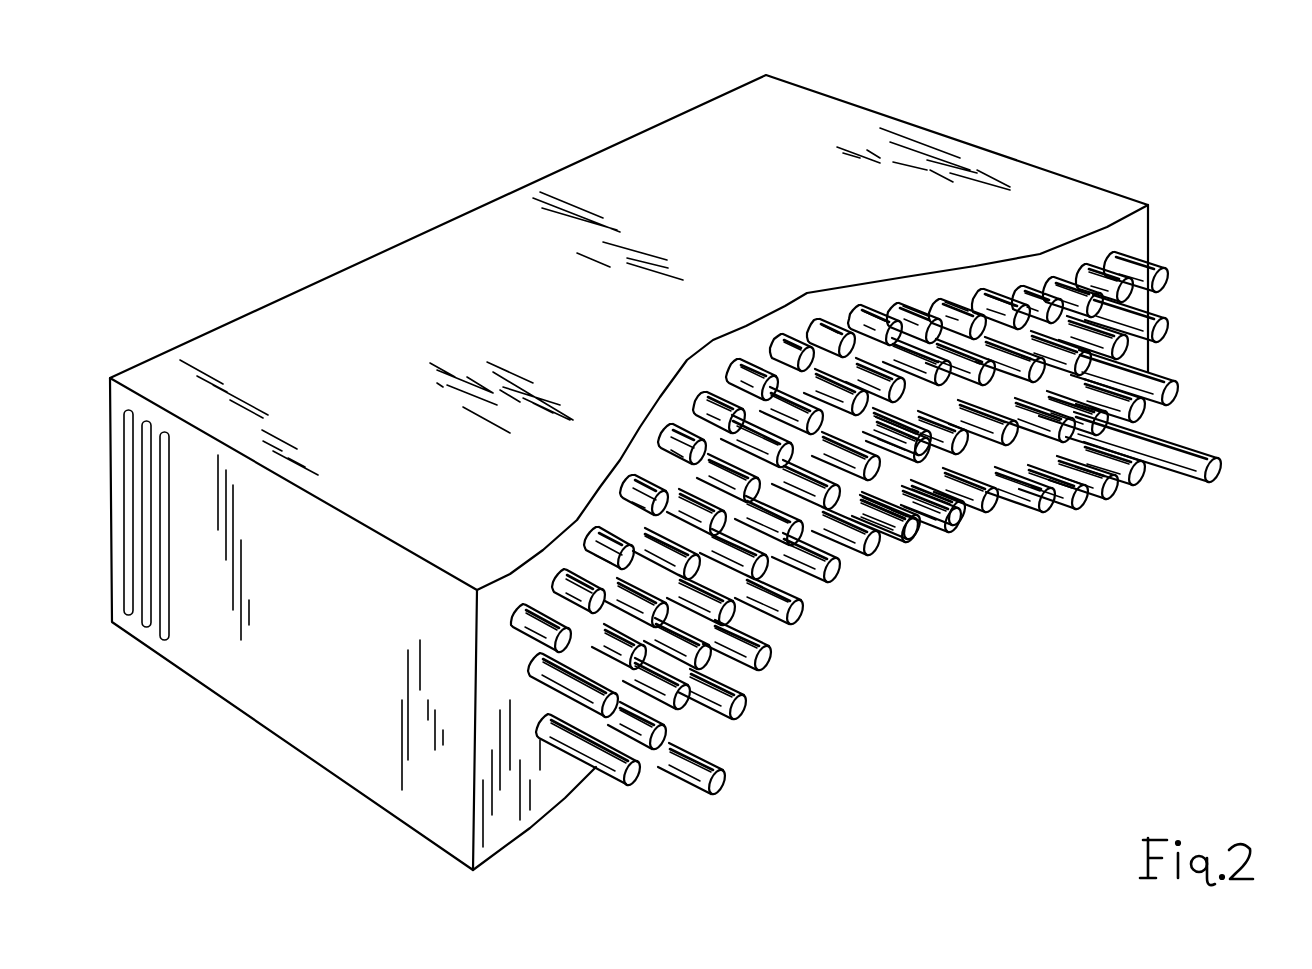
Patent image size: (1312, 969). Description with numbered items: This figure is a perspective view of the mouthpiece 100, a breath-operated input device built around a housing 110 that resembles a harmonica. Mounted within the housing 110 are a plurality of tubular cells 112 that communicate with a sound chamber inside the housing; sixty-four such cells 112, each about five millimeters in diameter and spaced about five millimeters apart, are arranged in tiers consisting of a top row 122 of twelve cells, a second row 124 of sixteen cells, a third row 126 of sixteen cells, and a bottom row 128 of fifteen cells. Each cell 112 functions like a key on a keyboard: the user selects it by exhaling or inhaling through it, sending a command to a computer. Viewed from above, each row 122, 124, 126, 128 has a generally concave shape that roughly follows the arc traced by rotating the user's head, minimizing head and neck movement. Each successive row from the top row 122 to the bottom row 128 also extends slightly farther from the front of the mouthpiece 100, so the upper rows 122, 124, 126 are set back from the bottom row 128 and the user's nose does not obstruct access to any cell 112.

The mouthpiece 100 is at (705, 445).
The housing 110 is at (827, 104).
The tubular cells 112 is at (1177, 477).
The top row 122 is at (1200, 258).
The second row 124 is at (1204, 325).
The third row 126 is at (1217, 393).
The bottom row 128 is at (1247, 480).